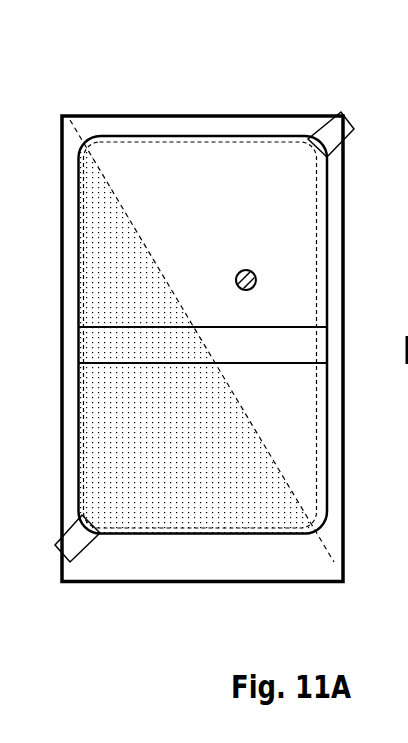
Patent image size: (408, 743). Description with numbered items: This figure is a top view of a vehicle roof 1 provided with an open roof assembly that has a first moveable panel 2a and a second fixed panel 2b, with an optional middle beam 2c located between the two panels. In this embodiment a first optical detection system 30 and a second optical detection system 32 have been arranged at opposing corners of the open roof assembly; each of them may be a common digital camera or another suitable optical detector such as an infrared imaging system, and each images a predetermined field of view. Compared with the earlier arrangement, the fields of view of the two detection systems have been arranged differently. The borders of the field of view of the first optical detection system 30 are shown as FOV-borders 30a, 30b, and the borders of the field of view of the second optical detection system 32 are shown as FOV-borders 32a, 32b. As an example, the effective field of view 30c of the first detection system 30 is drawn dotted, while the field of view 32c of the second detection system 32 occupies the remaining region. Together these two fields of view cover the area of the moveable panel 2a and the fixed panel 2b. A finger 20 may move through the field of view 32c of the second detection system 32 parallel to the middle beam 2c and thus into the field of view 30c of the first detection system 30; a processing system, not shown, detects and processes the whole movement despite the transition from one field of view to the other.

The vehicle roof 1 is at (247, 115).
The first moveable panel 2a is at (221, 257).
The second fixed panel 2b is at (294, 408).
The middle beam 2c is at (260, 358).
The finger 20 is at (245, 270).
The first optical detection system 30 is at (75, 541).
The FOV-border 30a is at (85, 193).
The FOV-border 30b is at (177, 530).
The effective field of view 30c is at (184, 457).
The second optical detection system 32 is at (327, 133).
The FOV-border 32a is at (321, 250).
The FOV-border 32b is at (127, 147).
The field of view 32c is at (226, 195).